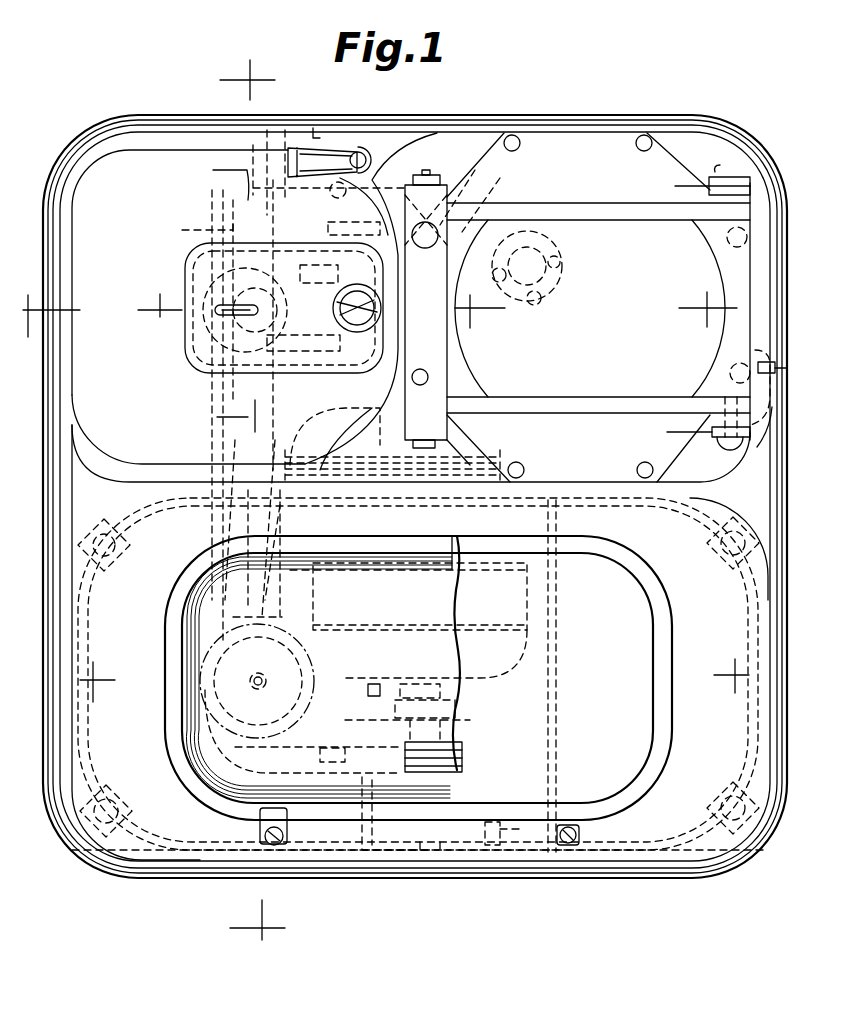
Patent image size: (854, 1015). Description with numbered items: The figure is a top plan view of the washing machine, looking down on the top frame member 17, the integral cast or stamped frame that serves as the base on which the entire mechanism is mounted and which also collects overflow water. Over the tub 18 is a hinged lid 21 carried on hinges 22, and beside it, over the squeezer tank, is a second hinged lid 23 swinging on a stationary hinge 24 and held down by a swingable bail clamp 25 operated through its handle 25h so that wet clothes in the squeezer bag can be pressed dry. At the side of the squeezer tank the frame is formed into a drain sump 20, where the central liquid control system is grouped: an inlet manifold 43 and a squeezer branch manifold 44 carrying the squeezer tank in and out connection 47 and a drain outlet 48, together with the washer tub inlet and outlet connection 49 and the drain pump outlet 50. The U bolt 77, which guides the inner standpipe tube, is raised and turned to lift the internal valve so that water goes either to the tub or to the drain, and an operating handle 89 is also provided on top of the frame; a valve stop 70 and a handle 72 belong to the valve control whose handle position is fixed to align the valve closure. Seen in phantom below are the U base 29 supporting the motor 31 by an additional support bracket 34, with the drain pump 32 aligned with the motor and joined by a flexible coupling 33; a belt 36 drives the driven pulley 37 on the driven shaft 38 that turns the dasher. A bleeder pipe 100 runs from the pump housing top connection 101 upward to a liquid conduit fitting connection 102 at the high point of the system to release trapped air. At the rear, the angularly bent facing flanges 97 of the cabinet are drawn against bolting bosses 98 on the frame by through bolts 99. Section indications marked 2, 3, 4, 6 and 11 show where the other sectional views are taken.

The top frame member 17 is at (667, 115).
The drain sump 20 is at (411, 307).
The hinged lid 21 is at (667, 772).
The U base 29 is at (557, 658).
The flexible coupling 33 is at (463, 690).
The inlet manifold 43 is at (401, 243).
The handle 25h is at (467, 200).
The hinged lid 23 is at (598, 307).
The stationary hinge 24 is at (717, 177).
The bail clamp 25 is at (452, 388).
The squeezer tank in and out connection 47 is at (507, 204).
The handle 72 is at (312, 175).
The valve stop 70 is at (356, 146).
The squeezer branch manifold 44 is at (316, 133).
The liquid conduit fitting connection 102 is at (320, 182).
The section line 11- 11 is at (220, 297).
The drain outlet 48 is at (193, 230).
The bleeder pipe 100 is at (187, 260).
The U bolt 77 is at (248, 308).
The operating handle 89 is at (362, 315).
The driven shaft 38 is at (373, 403).
The belt 36 is at (495, 460).
The driven pulley 37 is at (466, 446).
The through bolts 99 is at (757, 350).
The facing flanges 97 is at (778, 372).
The bolting bosses 98 is at (778, 420).
The tub 18 is at (744, 597).
The drain pump outlet 50 is at (238, 526).
The washer tub inlet and outlet connection 49 is at (270, 587).
The motor 31 is at (360, 665).
The support bracket 34 is at (488, 706).
The pump housing top connection 101 is at (462, 764).
The drain pump 32 is at (411, 864).
The hinges 22 is at (259, 828).
The section line 2- 2 is at (248, 498).
The section line 3- 3 is at (378, 329).
The section line 4- 4 is at (414, 685).
The section line 6- 6 is at (321, 323).